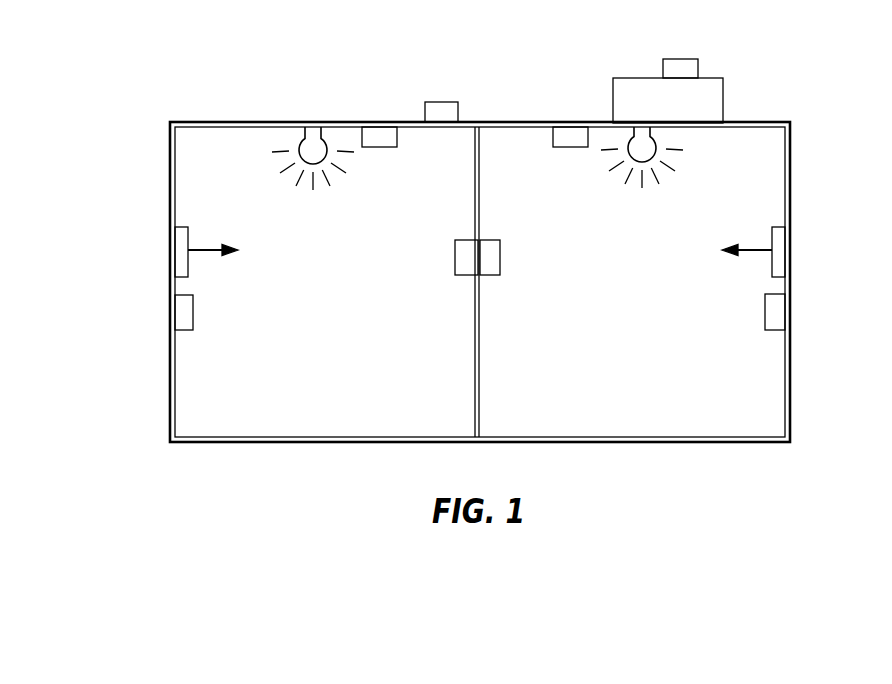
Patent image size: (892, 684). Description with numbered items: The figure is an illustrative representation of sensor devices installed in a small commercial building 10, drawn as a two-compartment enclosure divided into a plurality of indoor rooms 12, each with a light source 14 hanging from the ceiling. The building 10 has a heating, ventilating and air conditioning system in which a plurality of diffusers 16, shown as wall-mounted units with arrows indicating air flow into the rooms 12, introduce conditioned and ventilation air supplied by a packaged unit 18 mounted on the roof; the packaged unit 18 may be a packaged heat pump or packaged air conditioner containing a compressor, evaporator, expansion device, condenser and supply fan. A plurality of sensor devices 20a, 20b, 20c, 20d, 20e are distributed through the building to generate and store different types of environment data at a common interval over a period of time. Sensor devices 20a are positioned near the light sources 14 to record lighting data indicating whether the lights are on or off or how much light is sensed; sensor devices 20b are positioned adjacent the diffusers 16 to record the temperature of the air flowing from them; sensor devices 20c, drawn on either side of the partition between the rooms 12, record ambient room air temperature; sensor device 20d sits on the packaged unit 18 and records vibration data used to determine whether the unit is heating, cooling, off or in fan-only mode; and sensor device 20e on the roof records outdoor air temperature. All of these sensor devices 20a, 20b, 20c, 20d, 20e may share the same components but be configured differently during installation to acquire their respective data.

The commercial building 10 is at (128, 165).
The indoor room 12 is at (330, 278).
The light source 14 is at (303, 145).
The diffuser 16 is at (182, 227).
The packaged unit 18 is at (725, 104).
The sensor device 20a is at (381, 147).
The sensor device 20b is at (193, 314).
The sensor device 20c is at (455, 258).
The sensor device 20d is at (743, 44).
The sensor device 20e is at (442, 102).